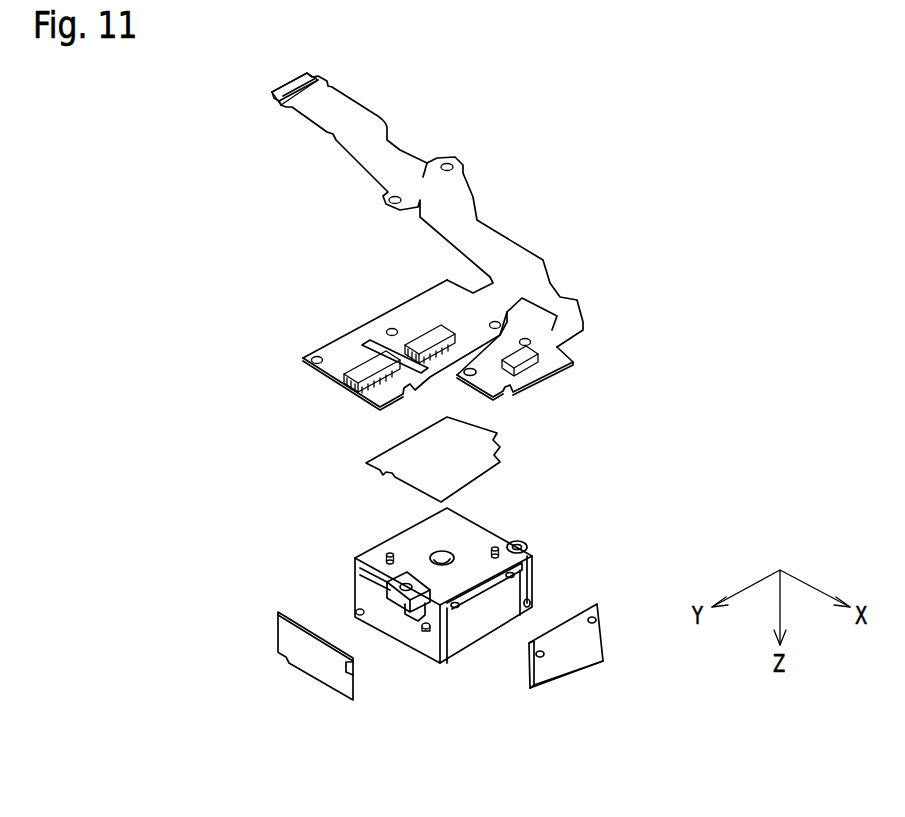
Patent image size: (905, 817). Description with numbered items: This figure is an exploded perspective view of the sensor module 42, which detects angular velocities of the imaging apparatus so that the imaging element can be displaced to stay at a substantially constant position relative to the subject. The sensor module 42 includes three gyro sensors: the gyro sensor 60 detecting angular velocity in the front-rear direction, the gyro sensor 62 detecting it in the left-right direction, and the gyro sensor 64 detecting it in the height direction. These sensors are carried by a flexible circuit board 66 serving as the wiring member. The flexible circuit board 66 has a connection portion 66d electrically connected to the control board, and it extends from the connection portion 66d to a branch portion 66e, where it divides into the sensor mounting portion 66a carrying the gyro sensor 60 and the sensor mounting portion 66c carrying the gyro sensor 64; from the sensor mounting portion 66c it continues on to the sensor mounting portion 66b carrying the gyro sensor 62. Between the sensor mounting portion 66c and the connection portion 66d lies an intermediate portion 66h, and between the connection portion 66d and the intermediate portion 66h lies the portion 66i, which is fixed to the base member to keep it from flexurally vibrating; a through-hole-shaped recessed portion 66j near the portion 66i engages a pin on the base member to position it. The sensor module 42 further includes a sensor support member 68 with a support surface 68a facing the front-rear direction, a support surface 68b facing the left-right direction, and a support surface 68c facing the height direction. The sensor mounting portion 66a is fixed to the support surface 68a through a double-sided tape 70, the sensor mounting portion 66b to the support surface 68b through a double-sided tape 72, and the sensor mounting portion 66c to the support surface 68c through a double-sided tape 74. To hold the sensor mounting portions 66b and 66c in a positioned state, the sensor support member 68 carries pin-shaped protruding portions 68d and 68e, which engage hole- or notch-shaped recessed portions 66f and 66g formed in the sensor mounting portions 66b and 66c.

The sensor module 42 is at (663, 259).
The gyro sensor 60 is at (530, 350).
The gyro sensor 62 is at (350, 360).
The gyro sensor 64 is at (428, 332).
The flexible circuit board 66 is at (360, 172).
The sensor mounting portion 66a is at (532, 375).
The sensor mounting portion 66b is at (343, 385).
The sensor mounting portion 66c is at (427, 307).
The connection portion 66d is at (296, 87).
The branch portion 66e is at (523, 280).
The recessed portion 66f is at (313, 357).
The recessed portion 66g is at (388, 331).
The intermediate portion 66h is at (475, 237).
The portion of the flexible circuit board 66i is at (425, 182).
The recessed portion 66j is at (450, 166).
The sensor support member 68 is at (540, 546).
The support surface 68a is at (468, 633).
The support surface 68b is at (408, 633).
The support surface 68c is at (420, 544).
The protruding portion 68d is at (357, 609).
The protruding portion 68e is at (386, 553).
The double-sided tape 70 is at (575, 661).
The double-sided tape 72 is at (310, 667).
The double-sided tape 74 is at (478, 441).